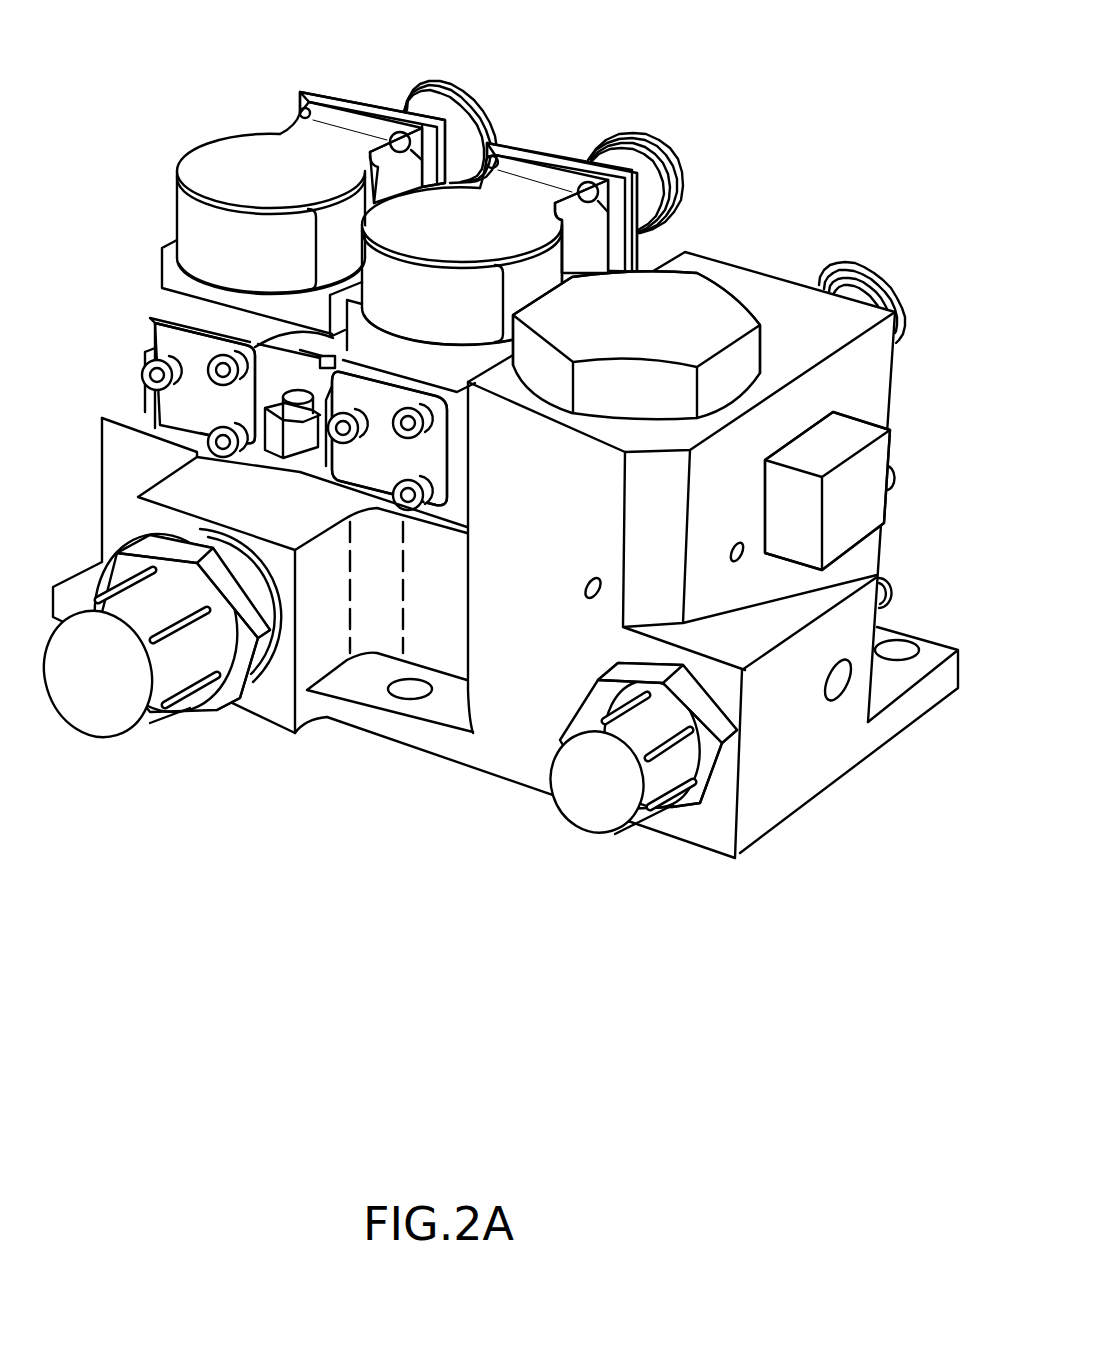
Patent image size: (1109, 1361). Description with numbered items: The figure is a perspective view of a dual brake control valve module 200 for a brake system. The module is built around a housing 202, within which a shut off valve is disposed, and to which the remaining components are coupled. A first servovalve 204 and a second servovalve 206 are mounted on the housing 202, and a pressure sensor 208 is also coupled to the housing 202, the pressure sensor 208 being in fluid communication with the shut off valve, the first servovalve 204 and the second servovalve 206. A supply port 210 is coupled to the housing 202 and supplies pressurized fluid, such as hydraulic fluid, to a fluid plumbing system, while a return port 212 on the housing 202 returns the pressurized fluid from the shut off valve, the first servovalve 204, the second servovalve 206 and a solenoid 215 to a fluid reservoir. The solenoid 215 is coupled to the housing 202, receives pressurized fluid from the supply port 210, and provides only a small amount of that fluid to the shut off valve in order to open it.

The dual brake control valve module 200 is at (493, 472).
The housing 202 is at (492, 748).
The first servovalve 204 is at (253, 133).
The second servovalve 206 is at (530, 135).
The pressure sensor 208 is at (876, 475).
The supply port 210 is at (597, 833).
The return port 212 is at (95, 733).
The solenoid 215 is at (738, 312).